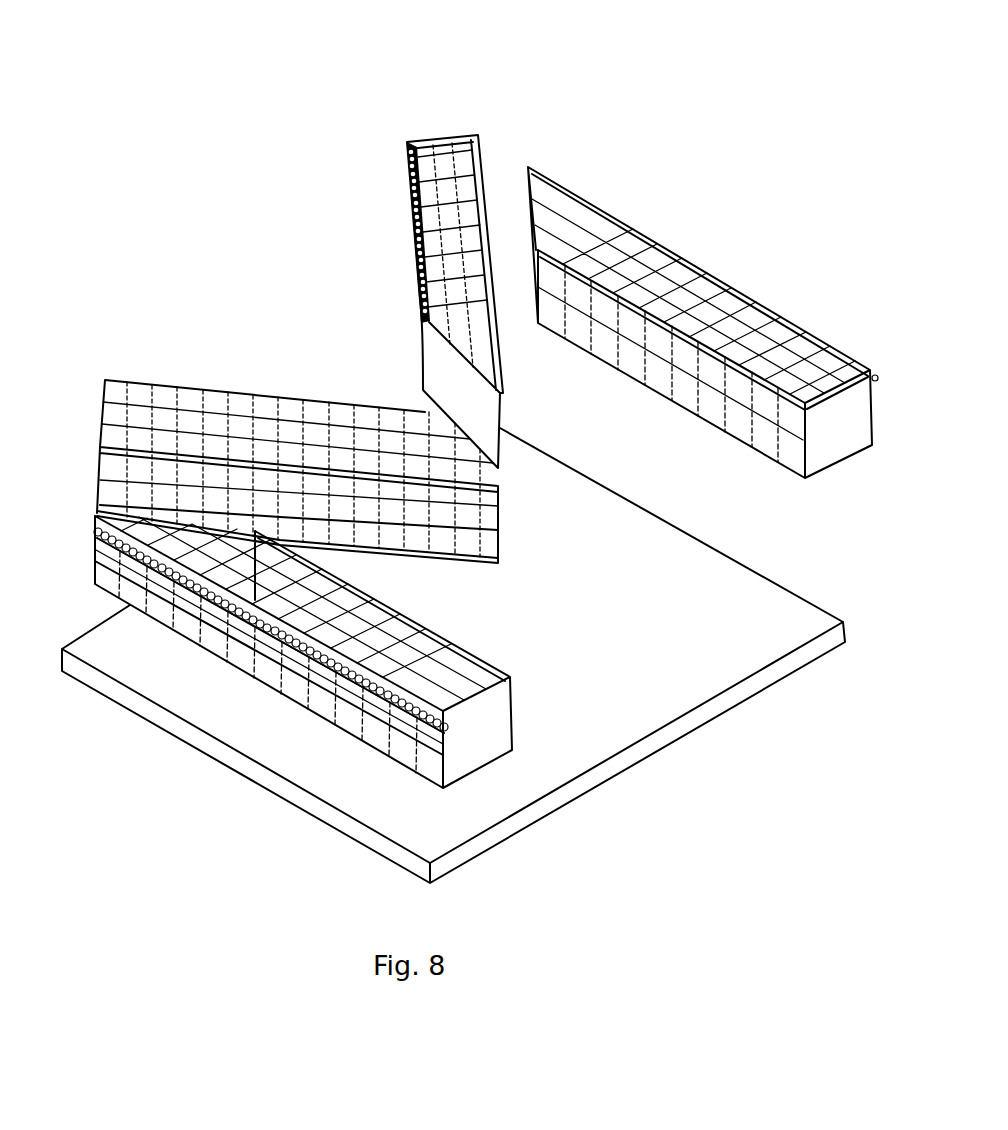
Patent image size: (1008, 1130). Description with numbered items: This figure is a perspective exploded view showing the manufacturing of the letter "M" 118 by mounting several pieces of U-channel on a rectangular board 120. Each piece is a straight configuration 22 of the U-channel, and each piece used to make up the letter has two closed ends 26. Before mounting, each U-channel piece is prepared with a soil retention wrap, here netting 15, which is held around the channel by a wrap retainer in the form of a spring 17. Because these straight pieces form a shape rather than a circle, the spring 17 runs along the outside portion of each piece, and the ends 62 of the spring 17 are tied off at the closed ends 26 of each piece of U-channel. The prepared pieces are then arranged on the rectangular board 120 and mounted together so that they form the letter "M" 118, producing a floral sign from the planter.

The netting 15 is at (499, 503).
The spring 17 is at (273, 655).
The straight configuration 22 is at (449, 78).
The closed ends 26 is at (457, 128).
The ends of the spring 62 is at (405, 173).
The letter "M" 118 is at (696, 78).
The rectangular board 120 is at (627, 760).